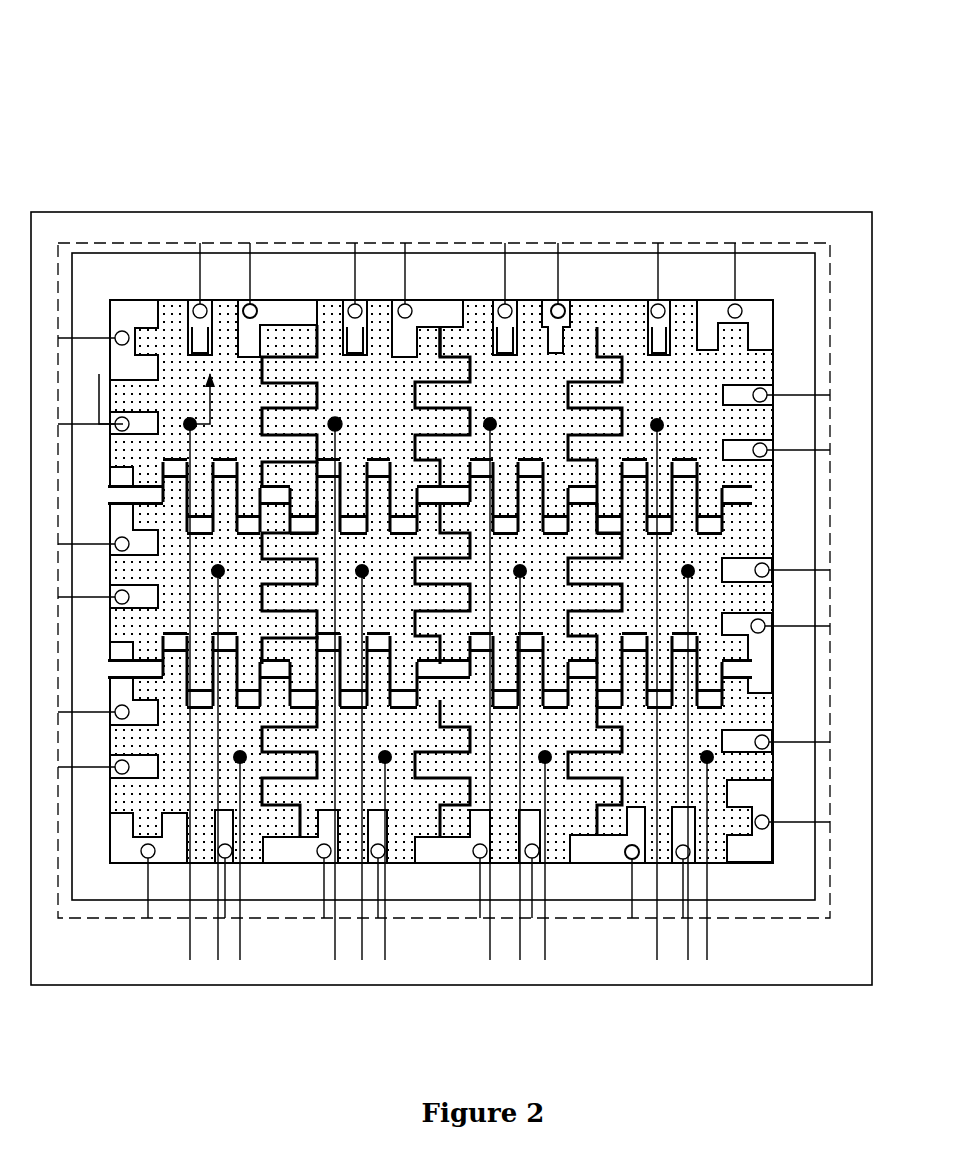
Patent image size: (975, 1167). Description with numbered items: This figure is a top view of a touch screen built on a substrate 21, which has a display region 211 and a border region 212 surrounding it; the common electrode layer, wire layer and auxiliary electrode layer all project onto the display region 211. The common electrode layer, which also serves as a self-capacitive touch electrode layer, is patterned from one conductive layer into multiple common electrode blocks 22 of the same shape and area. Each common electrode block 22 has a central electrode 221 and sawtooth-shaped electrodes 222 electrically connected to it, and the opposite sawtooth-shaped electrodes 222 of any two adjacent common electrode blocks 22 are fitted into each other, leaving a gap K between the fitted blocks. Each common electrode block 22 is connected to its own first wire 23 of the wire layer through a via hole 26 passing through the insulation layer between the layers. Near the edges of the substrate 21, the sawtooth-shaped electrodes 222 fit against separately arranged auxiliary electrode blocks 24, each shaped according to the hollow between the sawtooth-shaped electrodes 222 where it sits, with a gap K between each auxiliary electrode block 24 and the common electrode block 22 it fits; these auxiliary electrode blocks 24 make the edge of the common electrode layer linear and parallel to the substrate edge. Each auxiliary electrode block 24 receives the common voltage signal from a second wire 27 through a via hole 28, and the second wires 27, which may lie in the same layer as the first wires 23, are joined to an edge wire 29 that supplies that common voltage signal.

The substrate 21 is at (444, 543).
The display region 211 is at (547, 288).
The border region 212 is at (707, 230).
The common electrode block 22 is at (442, 441).
The central electrode 221 is at (379, 376).
The sawtooth-shaped electrode 222 is at (430, 353).
The first wire 23 is at (488, 932).
The auxiliary electrode block 24 is at (285, 314).
The via hole 26 is at (333, 410).
The second wire 27 is at (628, 868).
The via hole 28 is at (245, 303).
The edge wire 29 is at (792, 238).
The gap K is at (470, 298).